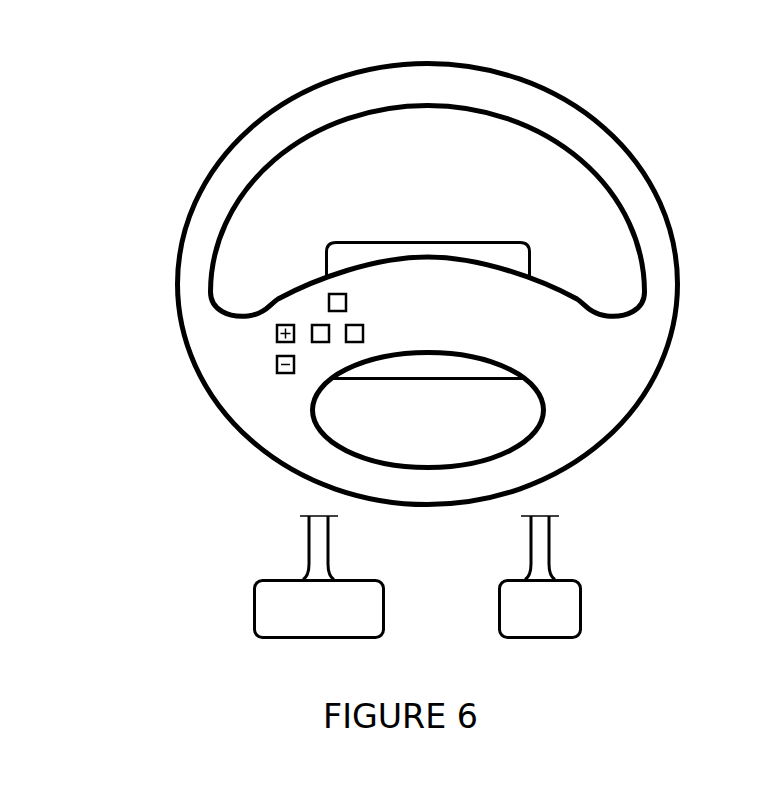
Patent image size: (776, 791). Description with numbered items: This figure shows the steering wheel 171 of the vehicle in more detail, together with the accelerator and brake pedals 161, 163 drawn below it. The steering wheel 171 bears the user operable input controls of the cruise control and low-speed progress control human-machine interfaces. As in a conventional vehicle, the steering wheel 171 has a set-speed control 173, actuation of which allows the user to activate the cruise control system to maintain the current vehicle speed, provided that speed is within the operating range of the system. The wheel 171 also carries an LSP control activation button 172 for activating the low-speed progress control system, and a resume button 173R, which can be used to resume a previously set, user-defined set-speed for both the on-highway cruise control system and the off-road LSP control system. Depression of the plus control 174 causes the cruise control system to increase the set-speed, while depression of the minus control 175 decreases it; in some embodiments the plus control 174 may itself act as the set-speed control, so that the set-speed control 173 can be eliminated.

The accelerator pedal 161 is at (565, 603).
The brake pedal 163 is at (267, 605).
The steering wheel 171 is at (657, 239).
The LSP control activation button 172 is at (265, 171).
The set-speed control 173 is at (311, 327).
The resume button 173R is at (235, 418).
The "+" control 174 is at (276, 328).
The "−" control 175 is at (276, 369).